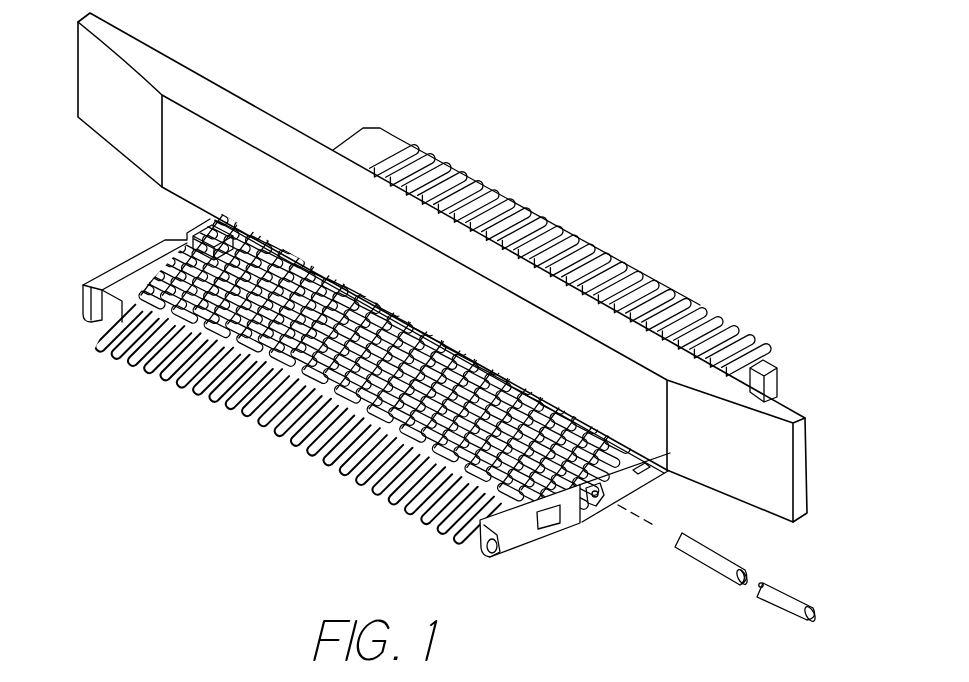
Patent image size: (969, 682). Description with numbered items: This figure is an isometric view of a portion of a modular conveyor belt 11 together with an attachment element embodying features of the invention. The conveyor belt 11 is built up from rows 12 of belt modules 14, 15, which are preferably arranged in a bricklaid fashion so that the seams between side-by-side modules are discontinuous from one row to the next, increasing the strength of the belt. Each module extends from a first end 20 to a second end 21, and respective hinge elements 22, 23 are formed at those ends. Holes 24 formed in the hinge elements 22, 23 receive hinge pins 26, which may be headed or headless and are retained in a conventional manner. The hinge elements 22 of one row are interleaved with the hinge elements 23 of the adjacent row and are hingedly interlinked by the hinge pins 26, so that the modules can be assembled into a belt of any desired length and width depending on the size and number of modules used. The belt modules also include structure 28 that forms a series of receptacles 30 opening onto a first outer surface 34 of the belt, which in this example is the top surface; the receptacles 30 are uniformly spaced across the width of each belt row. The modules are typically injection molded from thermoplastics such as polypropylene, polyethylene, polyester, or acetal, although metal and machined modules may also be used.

The conveyor belt 11 is at (680, 142).
The rows 12 is at (137, 253).
The belt module 14 is at (88, 300).
The belt module 15 is at (523, 498).
The first end 20 is at (282, 448).
The second end 21 is at (667, 282).
The hinge elements 22 is at (165, 378).
The hinge elements 23 is at (453, 172).
The holes 24 is at (763, 360).
The hinge pins 26 is at (777, 592).
The structure 28 is at (342, 477).
The receptacles 30 is at (100, 348).
The first outer surface 34 is at (487, 540).